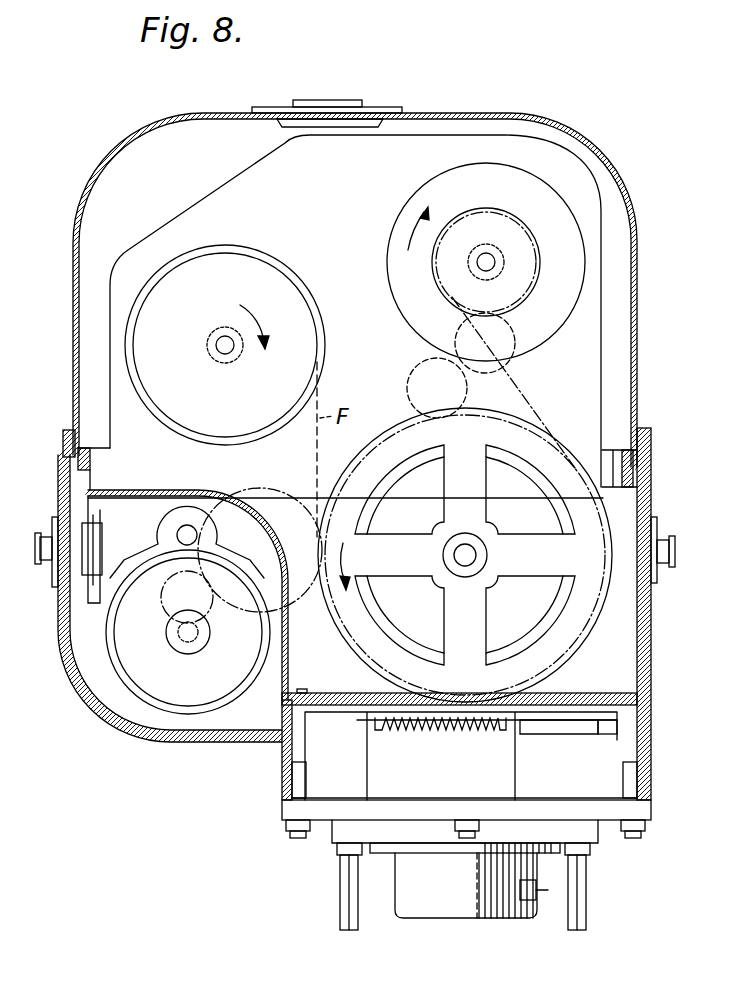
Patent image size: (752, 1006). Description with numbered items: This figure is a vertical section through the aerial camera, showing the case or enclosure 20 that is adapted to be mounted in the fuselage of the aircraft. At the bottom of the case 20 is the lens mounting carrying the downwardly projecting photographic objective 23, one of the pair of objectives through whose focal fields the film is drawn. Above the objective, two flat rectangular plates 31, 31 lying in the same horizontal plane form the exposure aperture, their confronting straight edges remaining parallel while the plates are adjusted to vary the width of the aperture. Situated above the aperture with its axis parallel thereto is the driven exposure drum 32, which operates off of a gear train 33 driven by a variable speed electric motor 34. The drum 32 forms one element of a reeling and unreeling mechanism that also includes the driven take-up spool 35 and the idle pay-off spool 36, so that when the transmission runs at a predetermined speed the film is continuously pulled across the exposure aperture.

The case 20 is at (627, 393).
The photographic objective 23 is at (465, 880).
The plate 31 is at (418, 730).
The exposure drum 32 is at (367, 637).
The gear train 33 is at (270, 496).
The variable speed electric motor 34 is at (188, 610).
The take-up spool 35 is at (418, 307).
The pay-off spool 36 is at (225, 345).